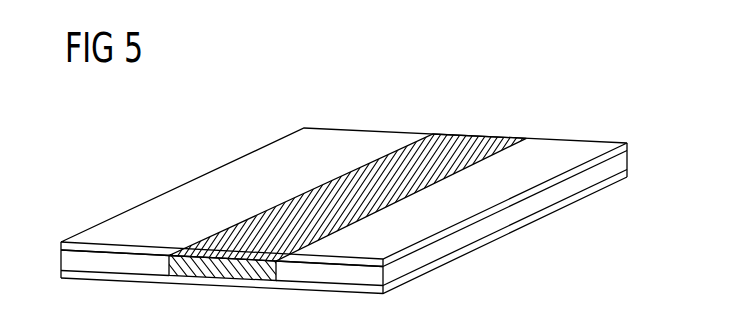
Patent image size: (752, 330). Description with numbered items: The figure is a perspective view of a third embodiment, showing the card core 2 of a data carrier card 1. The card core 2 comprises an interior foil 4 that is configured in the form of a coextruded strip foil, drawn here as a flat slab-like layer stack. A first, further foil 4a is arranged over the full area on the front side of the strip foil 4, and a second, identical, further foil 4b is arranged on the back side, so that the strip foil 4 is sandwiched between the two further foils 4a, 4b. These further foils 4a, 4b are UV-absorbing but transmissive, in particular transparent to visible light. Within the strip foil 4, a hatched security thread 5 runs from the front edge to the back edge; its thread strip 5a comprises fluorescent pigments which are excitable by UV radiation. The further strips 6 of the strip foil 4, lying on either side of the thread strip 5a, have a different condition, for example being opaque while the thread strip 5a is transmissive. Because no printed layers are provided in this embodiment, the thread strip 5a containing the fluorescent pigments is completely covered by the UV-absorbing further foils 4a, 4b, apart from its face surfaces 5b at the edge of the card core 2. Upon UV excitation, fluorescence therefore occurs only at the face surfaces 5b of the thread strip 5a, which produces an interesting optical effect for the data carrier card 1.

The data carrier card 1 is at (116, 144).
The card core 2 is at (633, 143).
The interior foil 4 is at (510, 215).
The first further foil 4a is at (572, 152).
The second further foil 4b is at (575, 203).
The security thread 5 is at (533, 132).
The thread strip 5a is at (320, 198).
The face surfaces 5b is at (215, 273).
The further strips 6 is at (139, 238).